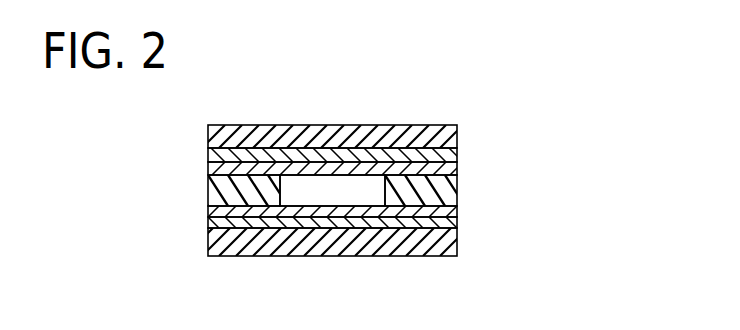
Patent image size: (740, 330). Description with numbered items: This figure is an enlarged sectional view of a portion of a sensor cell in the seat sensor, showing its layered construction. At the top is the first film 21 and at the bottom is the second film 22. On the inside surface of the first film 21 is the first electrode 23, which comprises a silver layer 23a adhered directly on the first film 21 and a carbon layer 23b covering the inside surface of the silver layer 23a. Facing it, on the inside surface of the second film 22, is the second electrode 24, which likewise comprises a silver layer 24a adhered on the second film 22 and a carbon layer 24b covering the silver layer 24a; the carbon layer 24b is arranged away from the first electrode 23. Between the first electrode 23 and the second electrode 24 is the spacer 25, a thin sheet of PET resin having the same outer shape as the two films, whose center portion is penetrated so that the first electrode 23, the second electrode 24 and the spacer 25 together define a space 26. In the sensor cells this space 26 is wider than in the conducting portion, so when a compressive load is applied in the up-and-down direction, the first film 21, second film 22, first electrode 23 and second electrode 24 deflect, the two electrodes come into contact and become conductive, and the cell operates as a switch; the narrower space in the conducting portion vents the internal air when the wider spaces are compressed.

The first film 21 is at (277, 133).
The second film 22 is at (283, 250).
The first electrode 23 is at (398, 136).
The silver layer 23a is at (457, 149).
The carbon layer 23b is at (457, 170).
The second electrode 24 is at (405, 259).
The silver layer 24a is at (457, 228).
The carbon layer 24b is at (457, 213).
The spacer 25 is at (215, 191).
The space 26 is at (345, 187).